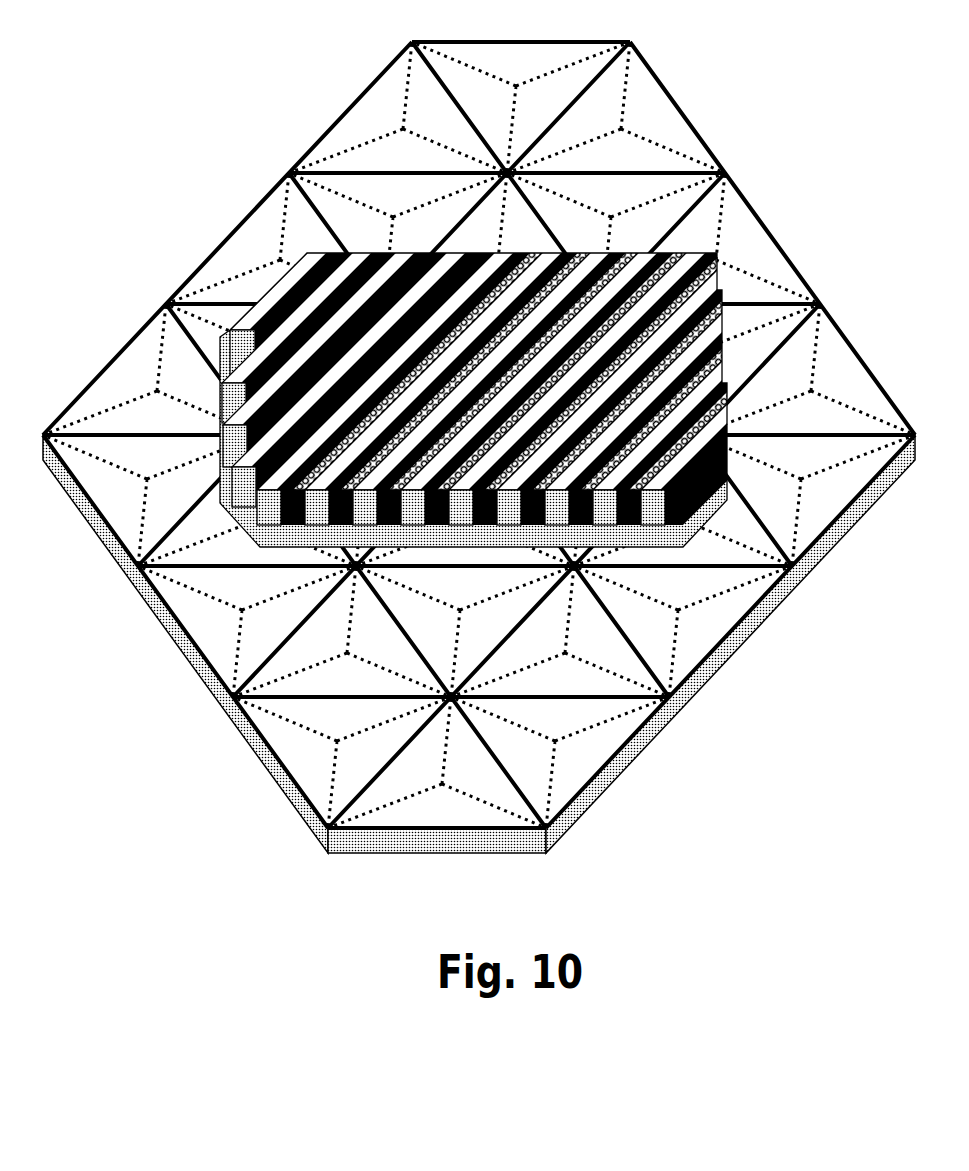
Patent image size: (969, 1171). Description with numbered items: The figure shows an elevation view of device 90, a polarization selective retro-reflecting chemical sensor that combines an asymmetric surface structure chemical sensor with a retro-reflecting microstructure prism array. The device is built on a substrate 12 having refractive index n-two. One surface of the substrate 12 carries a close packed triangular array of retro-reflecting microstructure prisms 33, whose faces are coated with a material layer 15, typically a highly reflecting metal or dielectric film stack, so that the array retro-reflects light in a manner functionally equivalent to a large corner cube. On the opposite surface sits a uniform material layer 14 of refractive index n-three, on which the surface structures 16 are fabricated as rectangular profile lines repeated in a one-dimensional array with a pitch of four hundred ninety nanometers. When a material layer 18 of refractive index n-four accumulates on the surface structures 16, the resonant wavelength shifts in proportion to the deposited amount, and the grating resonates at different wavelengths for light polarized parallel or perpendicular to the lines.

The device 90 is at (506, 447).
The substrate 12 is at (479, 447).
The retro-reflecting microstructure prisms 33 is at (622, 126).
The material layer 15 is at (580, 768).
The uniform material layer 14 is at (518, 438).
The surface structures 16 is at (240, 343).
The material layer 18 is at (700, 256).